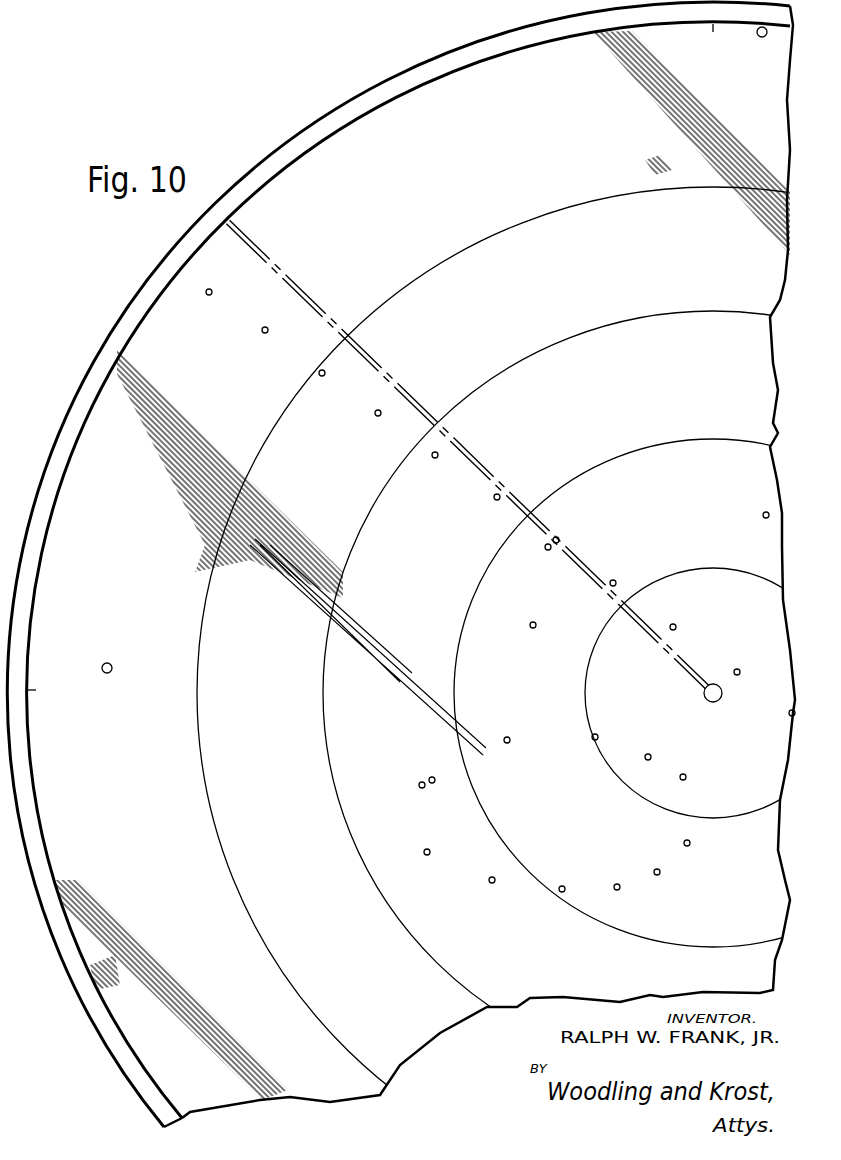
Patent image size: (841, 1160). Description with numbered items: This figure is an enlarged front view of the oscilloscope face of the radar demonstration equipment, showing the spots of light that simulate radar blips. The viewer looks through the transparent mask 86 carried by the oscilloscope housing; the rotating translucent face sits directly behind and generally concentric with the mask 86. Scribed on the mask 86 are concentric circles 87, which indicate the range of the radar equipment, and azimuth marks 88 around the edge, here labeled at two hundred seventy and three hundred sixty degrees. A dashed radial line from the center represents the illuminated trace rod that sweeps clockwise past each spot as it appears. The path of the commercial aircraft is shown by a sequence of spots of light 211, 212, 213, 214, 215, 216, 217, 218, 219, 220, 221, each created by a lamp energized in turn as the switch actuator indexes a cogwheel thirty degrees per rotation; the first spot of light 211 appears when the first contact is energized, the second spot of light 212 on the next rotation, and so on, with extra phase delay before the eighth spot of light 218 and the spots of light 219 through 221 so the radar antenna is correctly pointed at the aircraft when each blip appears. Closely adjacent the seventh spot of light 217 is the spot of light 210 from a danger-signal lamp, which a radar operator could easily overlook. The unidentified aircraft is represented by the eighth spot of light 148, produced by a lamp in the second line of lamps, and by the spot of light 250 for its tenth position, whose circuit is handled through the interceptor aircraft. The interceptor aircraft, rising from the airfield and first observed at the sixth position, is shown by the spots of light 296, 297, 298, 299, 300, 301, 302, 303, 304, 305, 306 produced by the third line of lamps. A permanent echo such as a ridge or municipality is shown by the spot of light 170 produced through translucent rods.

The transparent mask 86 is at (457, 83).
The concentric circles 87 is at (657, 313).
The azimuth marks 88 is at (752, 56).
The eighth spot of light 148 is at (536, 626).
The spot of light 170 is at (764, 512).
The spot of light 210 is at (548, 550).
The first spot of light 211 is at (209, 295).
The second spot of light 212 is at (265, 333).
The third spot of light 213 is at (320, 376).
The fourth spot of light 214 is at (378, 416).
The fifth spot of light 215 is at (432, 457).
The sixth spot of light 216 is at (498, 500).
The seventh spot of light 217 is at (558, 538).
The eighth spot of light 218 is at (619, 573).
The ninth spot of light 219 is at (685, 608).
The tenth spot of light 220 is at (749, 647).
The eleventh spot of light 221 is at (790, 716).
The spot of light 250 is at (419, 786).
The spot of light 296 is at (685, 775).
The spot of light 297 is at (648, 746).
The spot of light 298 is at (595, 740).
The spot of light 299 is at (507, 743).
The spot of light 300 is at (434, 783).
The spot of light 301 is at (424, 851).
The spot of light 302 is at (493, 877).
The spot of light 303 is at (563, 886).
The spot of light 304 is at (618, 884).
The spot of light 305 is at (658, 875).
The spot of light 306 is at (689, 846).